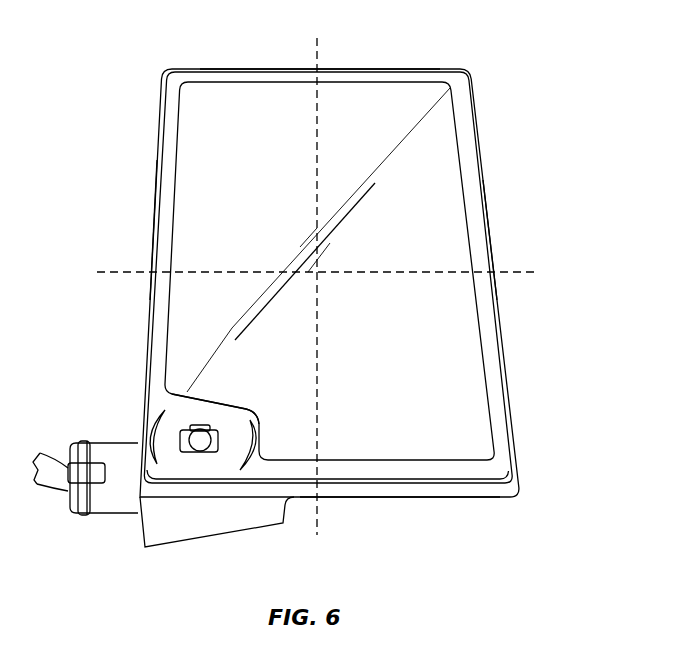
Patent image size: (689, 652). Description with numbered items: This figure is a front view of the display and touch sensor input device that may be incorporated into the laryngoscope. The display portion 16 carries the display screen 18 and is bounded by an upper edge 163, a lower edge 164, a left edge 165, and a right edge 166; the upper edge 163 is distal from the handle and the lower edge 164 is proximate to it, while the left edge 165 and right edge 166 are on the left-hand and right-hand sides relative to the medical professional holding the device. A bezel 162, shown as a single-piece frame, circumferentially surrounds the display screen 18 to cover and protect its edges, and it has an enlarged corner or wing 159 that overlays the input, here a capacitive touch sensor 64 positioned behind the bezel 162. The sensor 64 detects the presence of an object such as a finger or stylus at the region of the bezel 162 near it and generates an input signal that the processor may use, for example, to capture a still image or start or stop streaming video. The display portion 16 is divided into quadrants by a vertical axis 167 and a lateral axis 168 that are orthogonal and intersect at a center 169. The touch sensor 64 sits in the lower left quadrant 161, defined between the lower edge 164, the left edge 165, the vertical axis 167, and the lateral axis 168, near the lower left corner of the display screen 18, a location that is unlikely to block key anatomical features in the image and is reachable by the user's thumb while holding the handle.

The display portion 16 is at (490, 122).
The display screen 18 is at (441, 127).
The capacitive touch sensor 64 is at (98, 426).
The enlarged corner or wing 159 is at (231, 424).
The lower left quadrant 161 is at (192, 338).
The bezel 162 is at (202, 461).
The upper edge 163 is at (358, 68).
The lower edge 164 is at (422, 483).
The left edge 165 is at (156, 176).
The right edge 166 is at (487, 224).
The vertical axis 167 is at (313, 45).
The lateral axis 168 is at (515, 274).
The center 169 is at (318, 274).